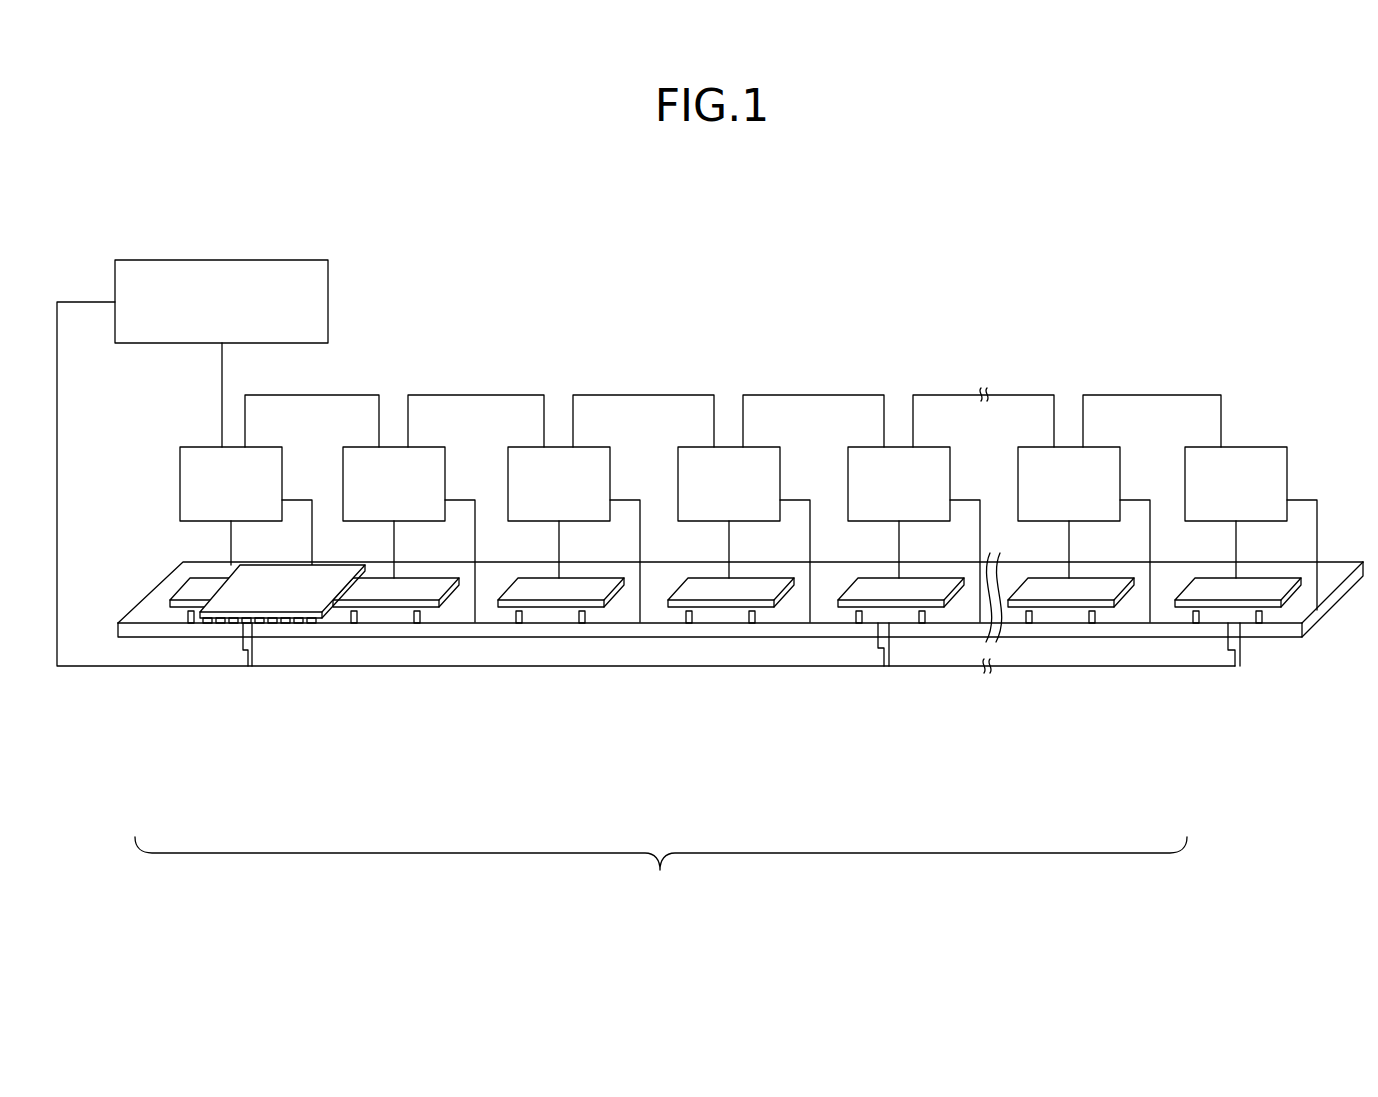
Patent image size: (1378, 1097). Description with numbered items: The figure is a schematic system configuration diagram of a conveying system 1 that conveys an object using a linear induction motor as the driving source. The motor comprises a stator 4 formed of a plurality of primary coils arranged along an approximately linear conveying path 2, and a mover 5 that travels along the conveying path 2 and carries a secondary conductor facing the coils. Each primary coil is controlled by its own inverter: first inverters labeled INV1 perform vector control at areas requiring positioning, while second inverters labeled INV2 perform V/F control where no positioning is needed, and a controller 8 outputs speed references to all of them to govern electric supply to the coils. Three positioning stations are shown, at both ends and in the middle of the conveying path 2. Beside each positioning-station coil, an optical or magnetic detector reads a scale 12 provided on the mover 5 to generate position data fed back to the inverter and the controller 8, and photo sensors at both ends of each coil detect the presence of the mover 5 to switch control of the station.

The conveying system 1 is at (1262, 208).
The conveying path 2 is at (1340, 592).
The stator 4 is at (661, 870).
The mover 5 is at (312, 597).
The controller 8 is at (328, 300).
The scale 12 is at (210, 623).